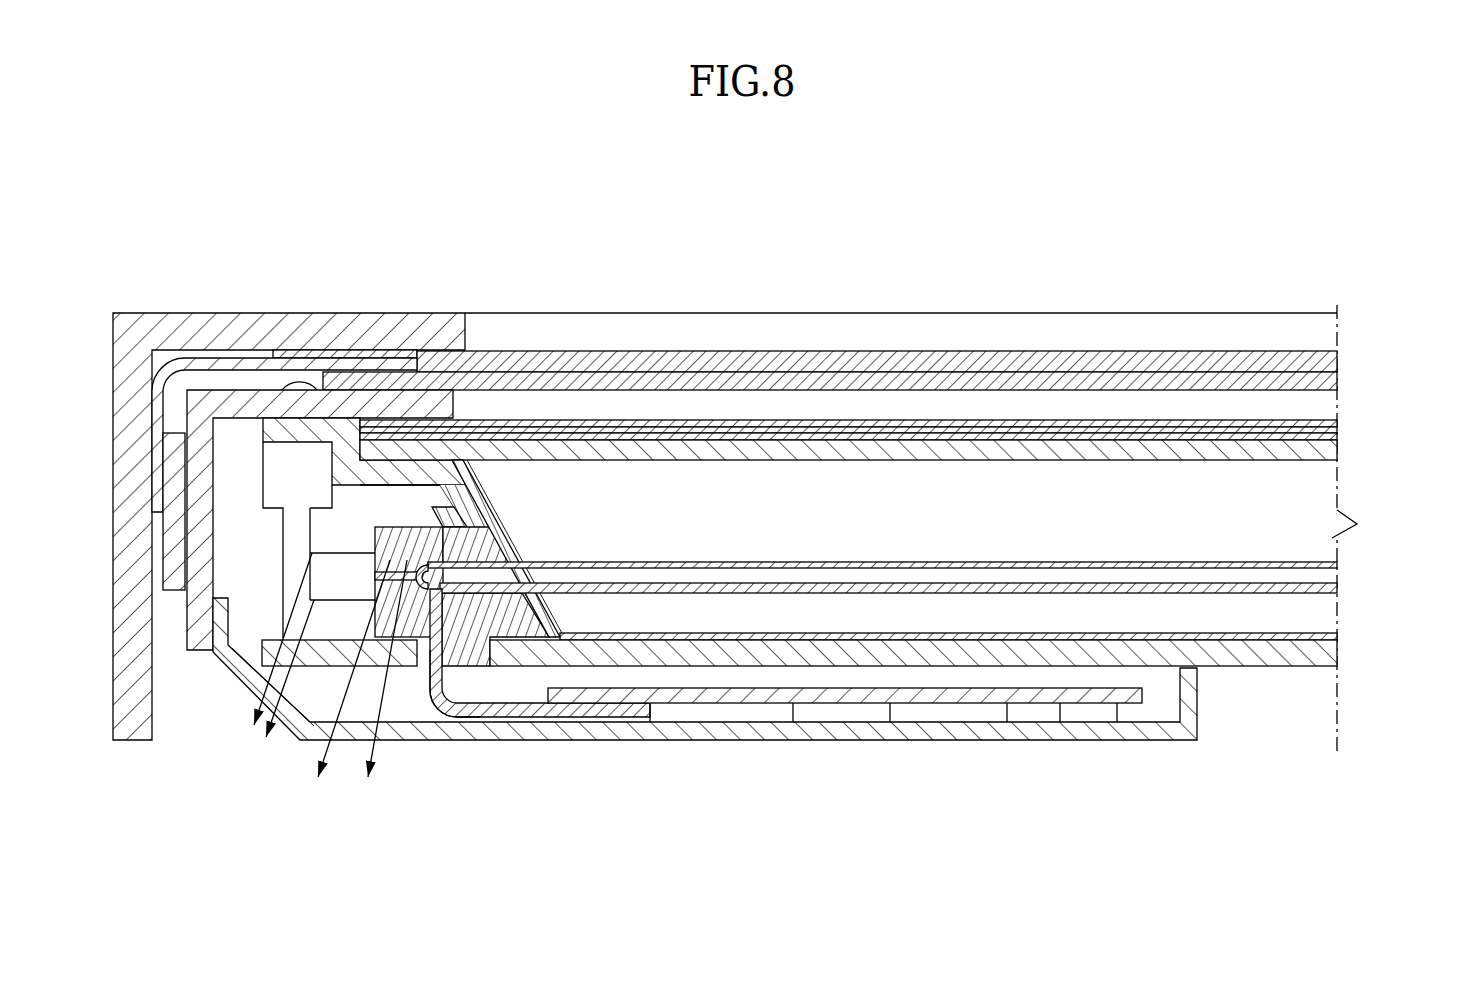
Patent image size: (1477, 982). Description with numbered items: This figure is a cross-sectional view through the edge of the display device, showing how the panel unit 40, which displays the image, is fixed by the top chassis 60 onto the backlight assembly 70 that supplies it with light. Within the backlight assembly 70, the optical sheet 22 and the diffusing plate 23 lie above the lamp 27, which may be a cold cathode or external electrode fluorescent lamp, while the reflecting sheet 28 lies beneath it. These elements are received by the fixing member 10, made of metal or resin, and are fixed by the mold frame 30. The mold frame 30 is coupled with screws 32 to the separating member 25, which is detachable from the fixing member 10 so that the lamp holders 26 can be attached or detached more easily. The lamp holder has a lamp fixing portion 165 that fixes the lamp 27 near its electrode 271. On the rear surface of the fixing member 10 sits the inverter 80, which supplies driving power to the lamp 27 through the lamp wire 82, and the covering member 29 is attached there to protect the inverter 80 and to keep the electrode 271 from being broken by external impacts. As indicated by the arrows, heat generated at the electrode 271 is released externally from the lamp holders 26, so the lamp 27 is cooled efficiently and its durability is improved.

The fixing member 10 is at (1340, 655).
The optical sheet 22 is at (1345, 418).
The diffusing plate 23 is at (1340, 451).
The separating member 25 is at (462, 498).
The lamp holder 26 is at (399, 523).
The lamp 27 is at (1130, 562).
The reflecting sheet 28 is at (1340, 637).
The covering member 29 is at (1027, 742).
The mold frame 30 is at (200, 651).
The screw 32 is at (300, 381).
The panel unit 40 is at (1345, 351).
The top chassis 60 is at (245, 322).
The backlight assembly 70 is at (1412, 402).
The inverter 80 is at (812, 705).
The lamp wire 82 is at (598, 719).
The lamp fixing portion 165 is at (522, 570).
The electrode 271 is at (460, 719).